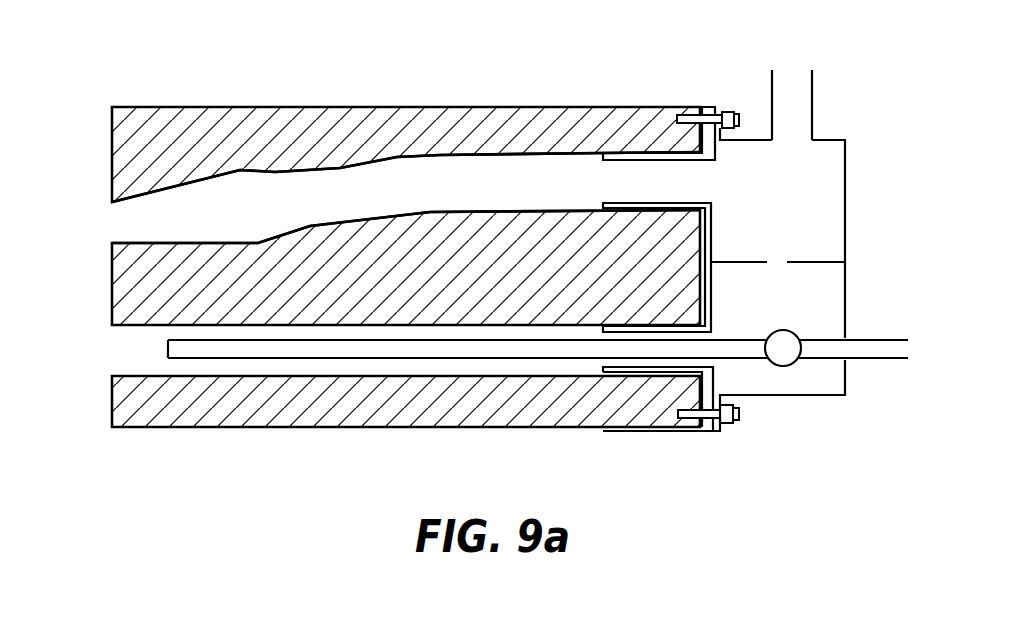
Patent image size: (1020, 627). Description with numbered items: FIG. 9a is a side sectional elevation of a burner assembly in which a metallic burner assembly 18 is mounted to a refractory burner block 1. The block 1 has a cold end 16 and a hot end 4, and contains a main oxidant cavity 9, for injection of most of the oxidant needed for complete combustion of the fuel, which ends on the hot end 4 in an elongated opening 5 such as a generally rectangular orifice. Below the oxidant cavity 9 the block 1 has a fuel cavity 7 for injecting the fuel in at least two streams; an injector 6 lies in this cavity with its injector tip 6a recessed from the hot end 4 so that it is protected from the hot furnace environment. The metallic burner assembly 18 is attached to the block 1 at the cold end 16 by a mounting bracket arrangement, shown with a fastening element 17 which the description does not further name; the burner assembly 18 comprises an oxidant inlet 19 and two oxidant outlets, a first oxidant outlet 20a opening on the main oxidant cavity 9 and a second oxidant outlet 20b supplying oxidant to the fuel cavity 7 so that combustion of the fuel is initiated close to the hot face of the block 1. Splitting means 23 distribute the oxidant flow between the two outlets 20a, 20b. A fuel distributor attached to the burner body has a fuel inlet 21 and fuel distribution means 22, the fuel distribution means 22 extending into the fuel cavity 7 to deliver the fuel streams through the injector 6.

The refractory burner block 1 is at (377, 189).
The hot end 4 is at (112, 153).
The elongated opening 5 is at (112, 202).
The injector 6 is at (446, 393).
The injector tip 6a is at (168, 342).
The fuel cavity 7 is at (127, 376).
The main oxidant cavity 9 is at (397, 157).
The cold end 16 is at (695, 106).
The nut 17 is at (733, 108).
The metallic burner assembly 18 is at (845, 183).
The oxidant inlet 19 is at (812, 84).
The first oxidant outlet 20a is at (612, 155).
The second oxidant outlet 20b is at (643, 375).
The fuel inlet 21 is at (877, 359).
The fuel distribution means 22 is at (792, 366).
The splitting means 23 is at (777, 262).